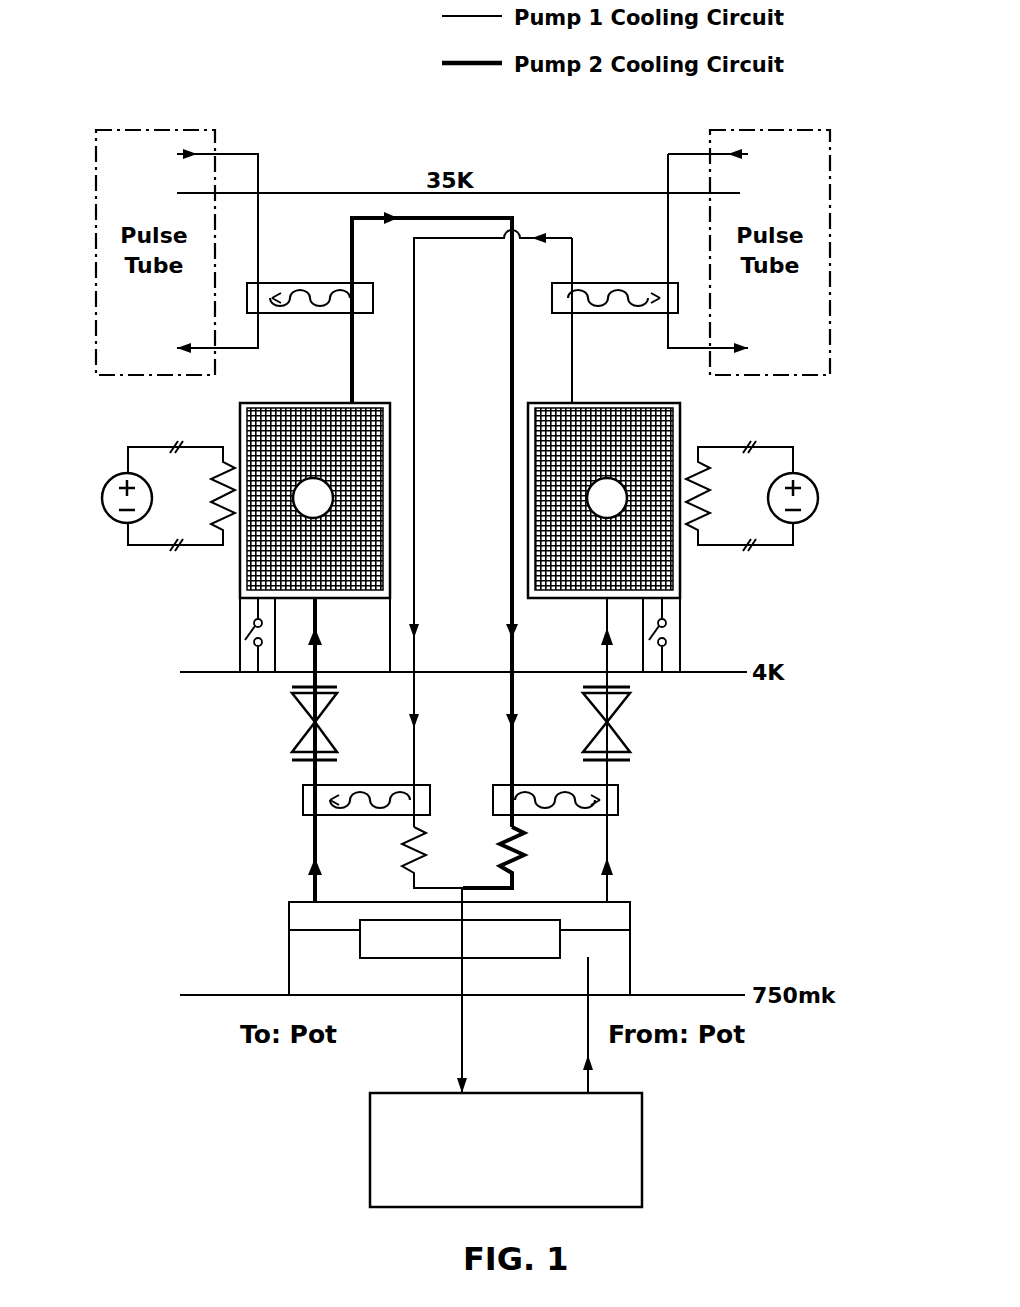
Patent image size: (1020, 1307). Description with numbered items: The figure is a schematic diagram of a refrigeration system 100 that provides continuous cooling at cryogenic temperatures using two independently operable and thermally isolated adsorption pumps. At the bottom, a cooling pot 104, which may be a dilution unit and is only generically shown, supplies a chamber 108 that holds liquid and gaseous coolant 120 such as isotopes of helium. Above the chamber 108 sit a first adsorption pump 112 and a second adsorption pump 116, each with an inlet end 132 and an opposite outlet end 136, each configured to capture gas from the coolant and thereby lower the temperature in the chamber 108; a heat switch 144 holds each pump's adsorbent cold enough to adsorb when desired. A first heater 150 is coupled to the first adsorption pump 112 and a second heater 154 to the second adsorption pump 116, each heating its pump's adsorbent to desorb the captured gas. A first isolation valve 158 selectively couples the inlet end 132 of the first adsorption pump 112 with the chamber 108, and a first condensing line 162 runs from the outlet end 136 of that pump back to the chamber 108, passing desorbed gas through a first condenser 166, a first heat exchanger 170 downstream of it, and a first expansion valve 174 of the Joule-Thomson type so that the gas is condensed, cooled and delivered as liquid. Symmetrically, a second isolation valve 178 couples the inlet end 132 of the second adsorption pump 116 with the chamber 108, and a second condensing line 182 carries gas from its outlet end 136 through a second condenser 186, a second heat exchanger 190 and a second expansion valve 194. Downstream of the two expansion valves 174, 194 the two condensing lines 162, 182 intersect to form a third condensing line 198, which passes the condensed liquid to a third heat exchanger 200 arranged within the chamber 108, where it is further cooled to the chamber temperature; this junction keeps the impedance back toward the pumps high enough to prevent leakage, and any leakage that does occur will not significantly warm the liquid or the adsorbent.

The refrigeration system 100 is at (158, 722).
The cooling pot 104 is at (642, 1144).
The chamber 108 is at (632, 916).
The first adsorption pump 112 is at (604, 497).
The second adsorption pump 116 is at (316, 497).
The liquid and gaseous coolant 120 is at (289, 949).
The inlet end 132 is at (352, 602).
The outlet end 136 is at (285, 396).
The heat switch 144 is at (238, 618).
The first heater 150 is at (838, 464).
The second heater 154 is at (78, 523).
The first isolation valve 158 is at (635, 722).
The first condensing line 162 is at (572, 245).
The first condenser 166 is at (620, 283).
The first heat exchanger 170 is at (370, 776).
The first expansion valve 174 is at (388, 852).
The second isolation valve 178 is at (280, 730).
The second condensing line 182 is at (350, 238).
The second condenser 186 is at (298, 276).
The second heat exchanger 190 is at (553, 776).
The second expansion valve 194 is at (540, 851).
The third condensing line 198 is at (460, 1043).
The third heat exchanger 200 is at (509, 975).